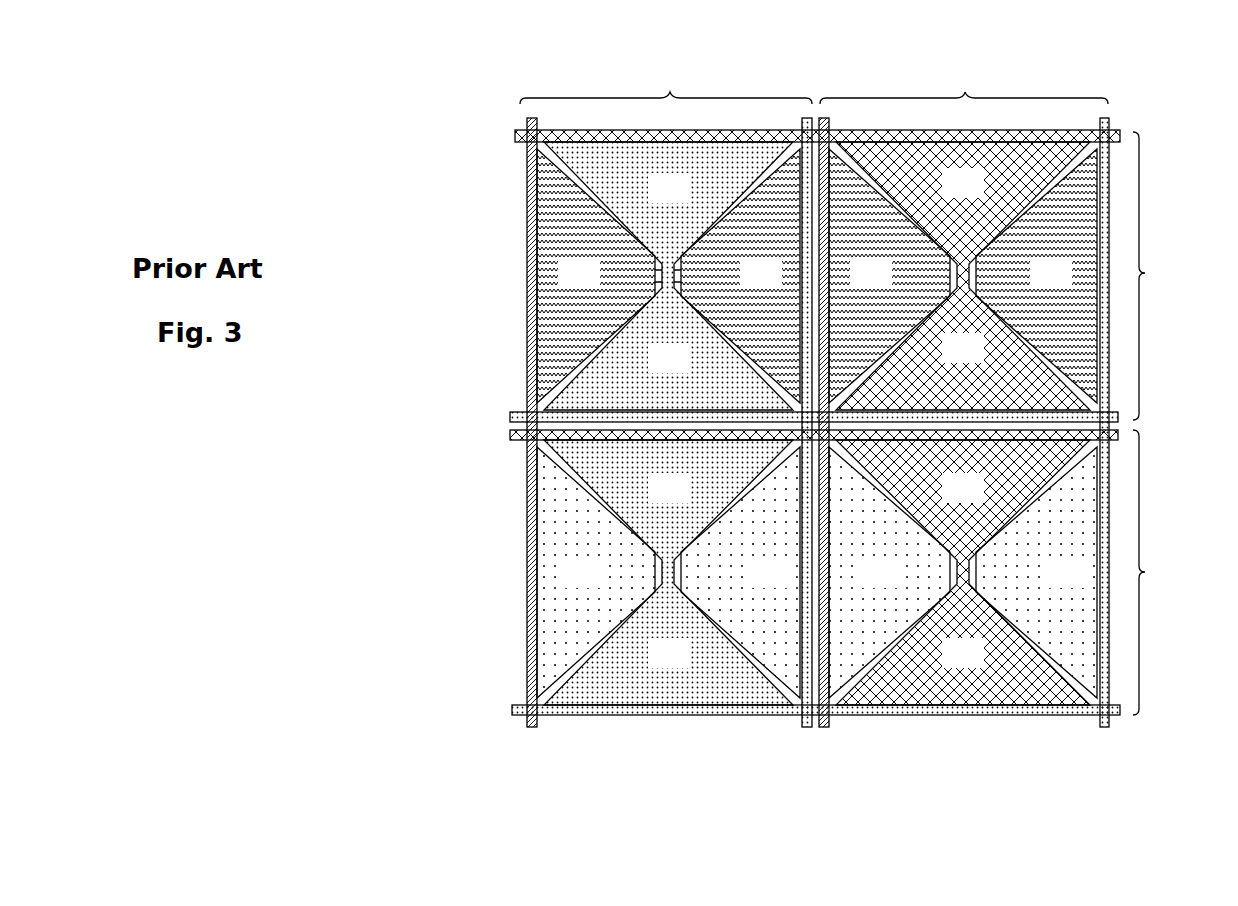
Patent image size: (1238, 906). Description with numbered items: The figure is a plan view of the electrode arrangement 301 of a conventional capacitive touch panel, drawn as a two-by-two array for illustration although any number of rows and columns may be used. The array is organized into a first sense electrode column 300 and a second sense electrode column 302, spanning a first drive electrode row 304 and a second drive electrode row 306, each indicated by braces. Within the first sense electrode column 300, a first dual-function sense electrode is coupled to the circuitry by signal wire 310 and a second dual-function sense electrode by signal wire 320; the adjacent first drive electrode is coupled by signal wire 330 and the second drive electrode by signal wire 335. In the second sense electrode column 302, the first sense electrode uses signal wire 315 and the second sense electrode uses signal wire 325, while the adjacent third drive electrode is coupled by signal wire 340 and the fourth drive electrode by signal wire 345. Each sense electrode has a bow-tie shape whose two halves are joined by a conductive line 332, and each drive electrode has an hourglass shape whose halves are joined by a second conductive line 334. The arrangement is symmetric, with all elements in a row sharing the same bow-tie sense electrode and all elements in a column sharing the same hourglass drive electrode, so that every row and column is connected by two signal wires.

The first sense electrode column 300 is at (668, 92).
The electrode arrangement of a conventional capacitive touch panel 301 is at (336, 206).
The second sense electrode column 302 is at (965, 92).
The first drive electrode row 304 is at (1152, 278).
The second drive electrode row 306 is at (1152, 575).
The signal wire 310 is at (531, 733).
The signal wire 315 is at (824, 733).
The signal wire 320 is at (808, 733).
The signal wire 325 is at (1104, 733).
The signal wire 330 is at (510, 415).
The conductive line 332 is at (661, 272).
The second conductive line 334 is at (676, 268).
The signal wire 335 is at (512, 709).
The signal wire 340 is at (526, 137).
The signal wire 345 is at (510, 436).